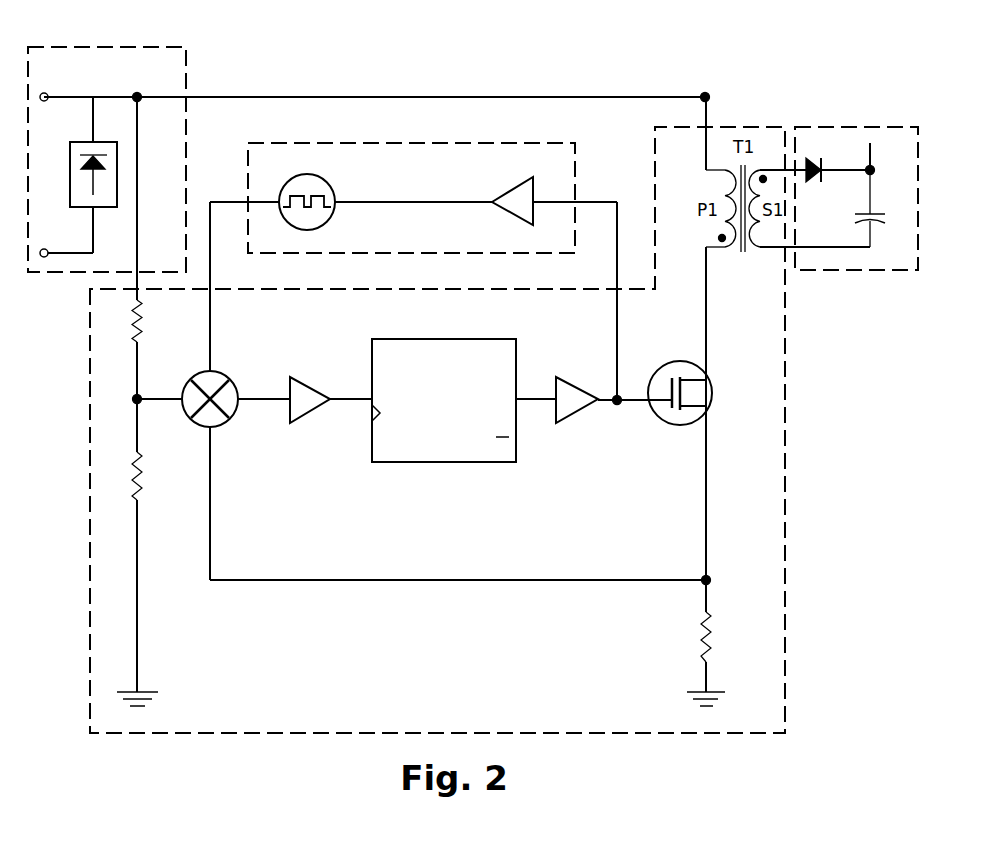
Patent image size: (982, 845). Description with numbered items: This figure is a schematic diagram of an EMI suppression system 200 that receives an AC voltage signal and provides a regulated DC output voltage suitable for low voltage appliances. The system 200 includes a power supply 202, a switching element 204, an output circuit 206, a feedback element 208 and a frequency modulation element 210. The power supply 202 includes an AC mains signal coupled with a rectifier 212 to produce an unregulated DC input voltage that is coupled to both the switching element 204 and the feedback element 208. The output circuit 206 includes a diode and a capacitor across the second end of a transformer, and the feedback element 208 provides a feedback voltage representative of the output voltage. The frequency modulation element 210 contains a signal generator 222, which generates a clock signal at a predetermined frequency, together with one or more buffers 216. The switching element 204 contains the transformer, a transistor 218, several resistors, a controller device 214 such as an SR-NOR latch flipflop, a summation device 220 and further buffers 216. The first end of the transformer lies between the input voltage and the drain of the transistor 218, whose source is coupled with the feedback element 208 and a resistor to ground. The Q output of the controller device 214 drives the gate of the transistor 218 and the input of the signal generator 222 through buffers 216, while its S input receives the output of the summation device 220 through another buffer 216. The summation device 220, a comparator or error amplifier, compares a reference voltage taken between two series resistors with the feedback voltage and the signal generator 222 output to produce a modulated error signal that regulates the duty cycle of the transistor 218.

The EMI suppression system 200 is at (719, 48).
The power supply 202 is at (186, 68).
The switching element 204 is at (785, 460).
The output circuit 206 is at (845, 127).
The feedback element 208 is at (565, 580).
The frequency modulation element 210 is at (575, 150).
The rectifier 212 is at (82, 142).
The controller device 214 is at (412, 462).
The buffer 216 is at (515, 188).
The transistor 218 is at (650, 380).
The summation device 220 is at (236, 380).
The signal generator 222 is at (305, 174).